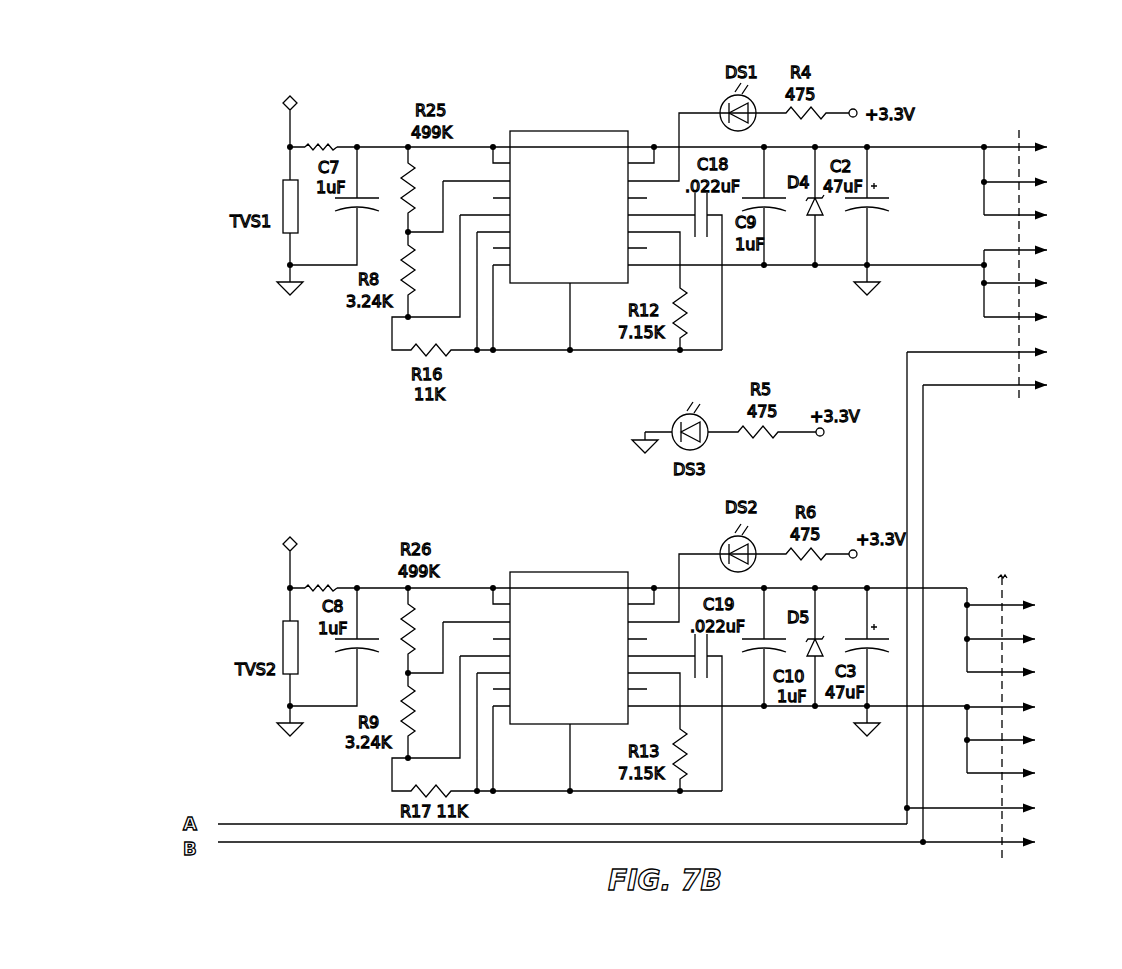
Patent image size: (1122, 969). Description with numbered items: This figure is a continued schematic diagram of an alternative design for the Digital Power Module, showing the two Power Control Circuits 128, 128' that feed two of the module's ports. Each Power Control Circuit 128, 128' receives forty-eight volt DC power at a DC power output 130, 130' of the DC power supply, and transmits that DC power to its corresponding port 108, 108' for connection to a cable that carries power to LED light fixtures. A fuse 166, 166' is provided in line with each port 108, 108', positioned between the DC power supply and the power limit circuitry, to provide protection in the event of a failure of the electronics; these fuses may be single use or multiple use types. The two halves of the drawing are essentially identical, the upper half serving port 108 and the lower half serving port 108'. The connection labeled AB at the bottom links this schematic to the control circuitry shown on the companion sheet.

The port 108 is at (1013, 241).
The port 108' is at (662, 679).
The Power Control Circuit 128 is at (561, 301).
The Power Control Circuit 128' is at (569, 596).
The DC power output 130 is at (264, 111).
The DC power output 130' is at (266, 535).
The fuse 166 is at (356, 120).
The fuse 166' is at (350, 546).